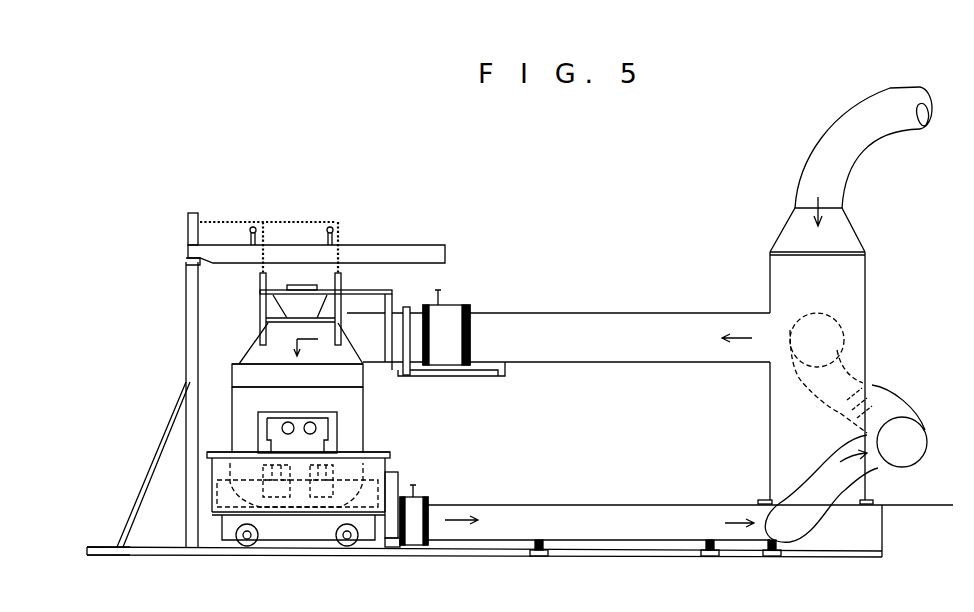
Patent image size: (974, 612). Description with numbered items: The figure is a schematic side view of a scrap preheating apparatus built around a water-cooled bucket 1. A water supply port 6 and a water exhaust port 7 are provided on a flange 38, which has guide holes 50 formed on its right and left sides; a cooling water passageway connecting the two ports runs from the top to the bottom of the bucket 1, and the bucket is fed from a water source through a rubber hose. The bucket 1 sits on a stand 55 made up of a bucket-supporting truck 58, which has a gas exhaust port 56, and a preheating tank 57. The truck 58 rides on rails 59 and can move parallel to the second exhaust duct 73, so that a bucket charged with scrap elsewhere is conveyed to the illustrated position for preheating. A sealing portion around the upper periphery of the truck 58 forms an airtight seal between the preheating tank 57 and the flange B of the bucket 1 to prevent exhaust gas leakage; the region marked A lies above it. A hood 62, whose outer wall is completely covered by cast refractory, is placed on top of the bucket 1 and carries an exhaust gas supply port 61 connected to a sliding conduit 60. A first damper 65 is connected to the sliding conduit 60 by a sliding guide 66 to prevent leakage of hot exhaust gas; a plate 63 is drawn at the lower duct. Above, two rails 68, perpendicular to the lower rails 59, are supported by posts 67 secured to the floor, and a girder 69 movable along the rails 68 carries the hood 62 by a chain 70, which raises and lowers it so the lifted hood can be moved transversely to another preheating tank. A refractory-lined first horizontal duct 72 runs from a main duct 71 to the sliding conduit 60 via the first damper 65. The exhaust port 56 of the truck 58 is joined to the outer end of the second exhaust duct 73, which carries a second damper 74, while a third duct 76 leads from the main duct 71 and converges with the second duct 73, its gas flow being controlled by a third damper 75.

The bucket 1 is at (255, 363).
The water supply port 6 is at (316, 428).
The water exhaust port 7 is at (282, 428).
The flange 38 is at (299, 420).
The guide holes 50 is at (330, 445).
The stand 55 is at (212, 497).
The gas exhaust port 56 is at (393, 537).
The preheating tank 57 is at (222, 507).
The bucket-supporting truck 58 is at (307, 533).
The rails 59 is at (88, 550).
The sliding conduit 60 is at (415, 317).
The exhaust gas supply port 61 is at (358, 318).
The hood 62 is at (255, 363).
The pusher plate 63 is at (398, 462).
The first damper 65 is at (442, 300).
The sliding guide 66 is at (508, 373).
The posts 67 is at (185, 292).
The rails 68 is at (186, 260).
The girder 69 is at (413, 252).
The chain 70 is at (280, 222).
The main duct 71 is at (868, 305).
The first horizontal duct 72 is at (617, 323).
The second exhaust duct 73 is at (452, 512).
The second damper 74 is at (418, 490).
The third damper 75 is at (872, 383).
The third duct 76 is at (808, 392).
The position A is at (230, 390).
The flange B is at (218, 453).